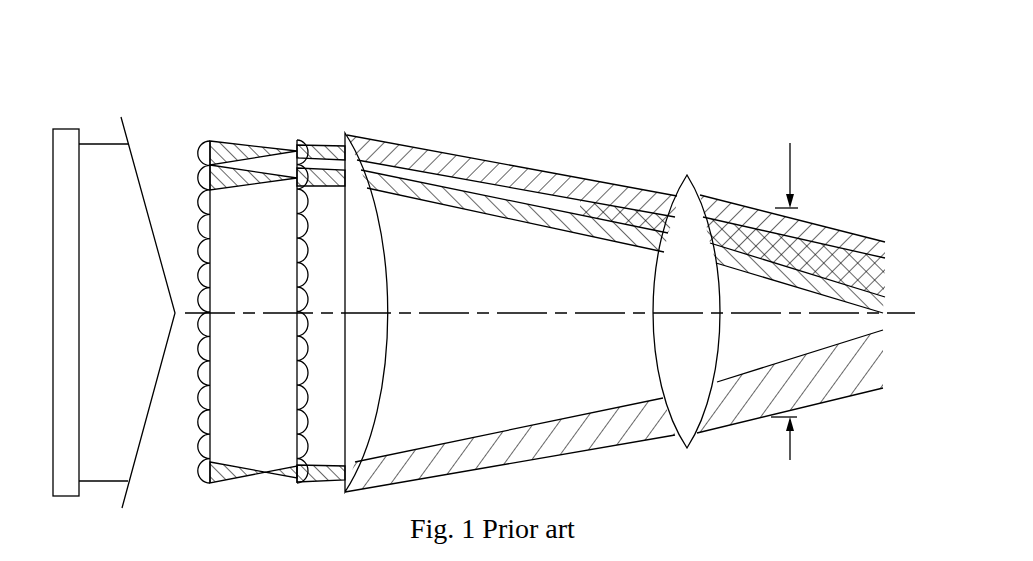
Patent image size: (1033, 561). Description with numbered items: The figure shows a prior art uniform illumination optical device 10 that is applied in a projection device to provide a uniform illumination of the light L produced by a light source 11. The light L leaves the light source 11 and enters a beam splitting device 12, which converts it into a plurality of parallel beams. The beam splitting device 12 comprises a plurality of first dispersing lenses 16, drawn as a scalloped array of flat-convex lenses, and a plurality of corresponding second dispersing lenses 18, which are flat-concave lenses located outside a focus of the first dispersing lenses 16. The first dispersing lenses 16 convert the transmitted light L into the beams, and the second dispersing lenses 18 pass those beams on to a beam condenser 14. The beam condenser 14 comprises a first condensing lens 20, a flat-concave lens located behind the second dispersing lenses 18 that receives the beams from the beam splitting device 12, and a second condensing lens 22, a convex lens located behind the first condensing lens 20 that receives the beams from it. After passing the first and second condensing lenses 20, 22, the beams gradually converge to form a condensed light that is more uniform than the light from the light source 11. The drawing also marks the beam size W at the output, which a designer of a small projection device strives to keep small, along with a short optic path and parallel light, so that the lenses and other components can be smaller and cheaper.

The uniform illumination optical device 10 is at (615, 57).
The light source 11 is at (64, 140).
The beam splitting device 12 is at (269, 100).
The beam condenser 14 is at (503, 110).
The first dispersing lenses 16 is at (207, 143).
The second dispersing lenses 18 is at (300, 140).
The first condensing lens 20 is at (347, 134).
The second condensing lens 22 is at (682, 177).
The light L is at (100, 155).
The lens array pitch l is at (224, 140).
The beam size W is at (793, 297).